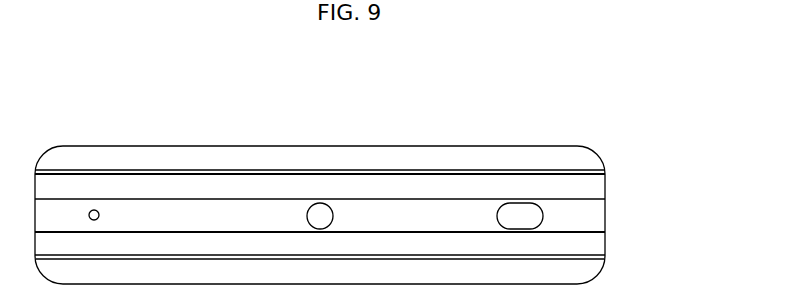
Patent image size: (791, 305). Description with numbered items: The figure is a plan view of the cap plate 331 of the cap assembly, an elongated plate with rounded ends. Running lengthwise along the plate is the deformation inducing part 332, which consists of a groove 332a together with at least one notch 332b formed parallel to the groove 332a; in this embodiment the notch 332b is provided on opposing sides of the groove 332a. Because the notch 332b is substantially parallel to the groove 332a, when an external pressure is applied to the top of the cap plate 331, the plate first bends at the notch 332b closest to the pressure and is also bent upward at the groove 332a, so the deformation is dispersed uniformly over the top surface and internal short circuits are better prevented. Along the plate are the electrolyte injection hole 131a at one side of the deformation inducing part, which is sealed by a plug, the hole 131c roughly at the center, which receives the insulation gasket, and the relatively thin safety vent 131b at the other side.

The cap plate 331 is at (611, 129).
The deformation inducing part 332 is at (320, 128).
The groove 332a is at (247, 198).
The notch 332b is at (193, 172).
The electrolyte injection hole 131a is at (94, 209).
The safety vent 131b is at (522, 213).
The hole 131c is at (320, 213).